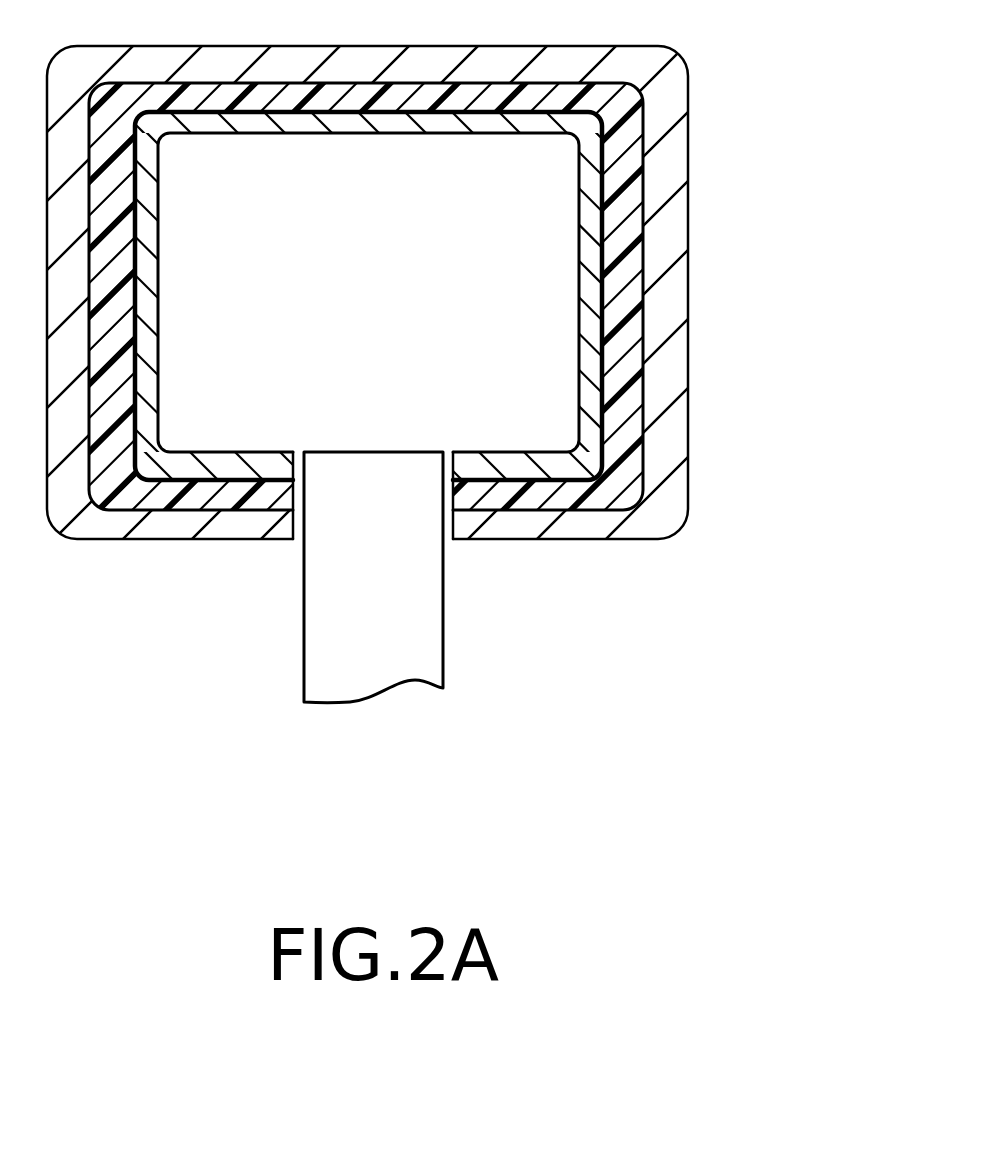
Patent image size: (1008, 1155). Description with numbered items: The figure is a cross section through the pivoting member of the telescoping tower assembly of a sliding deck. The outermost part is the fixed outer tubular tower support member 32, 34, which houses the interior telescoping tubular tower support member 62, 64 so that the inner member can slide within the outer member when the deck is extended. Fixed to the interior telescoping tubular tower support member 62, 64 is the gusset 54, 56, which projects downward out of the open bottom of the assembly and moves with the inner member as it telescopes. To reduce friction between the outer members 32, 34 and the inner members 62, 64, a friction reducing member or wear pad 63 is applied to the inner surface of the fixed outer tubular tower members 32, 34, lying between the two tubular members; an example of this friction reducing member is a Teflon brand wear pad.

The fixed outer tubular tower support member 32 is at (504, 577).
The fixed outer tubular tower support member 34 is at (663, 117).
The wear pad 63 is at (624, 347).
The interior telescoping tubular tower support member 62 is at (504, 577).
The interior telescoping tubular tower support member 64 is at (590, 262).
The gusset 54 is at (460, 577).
The gusset 56 is at (410, 608).